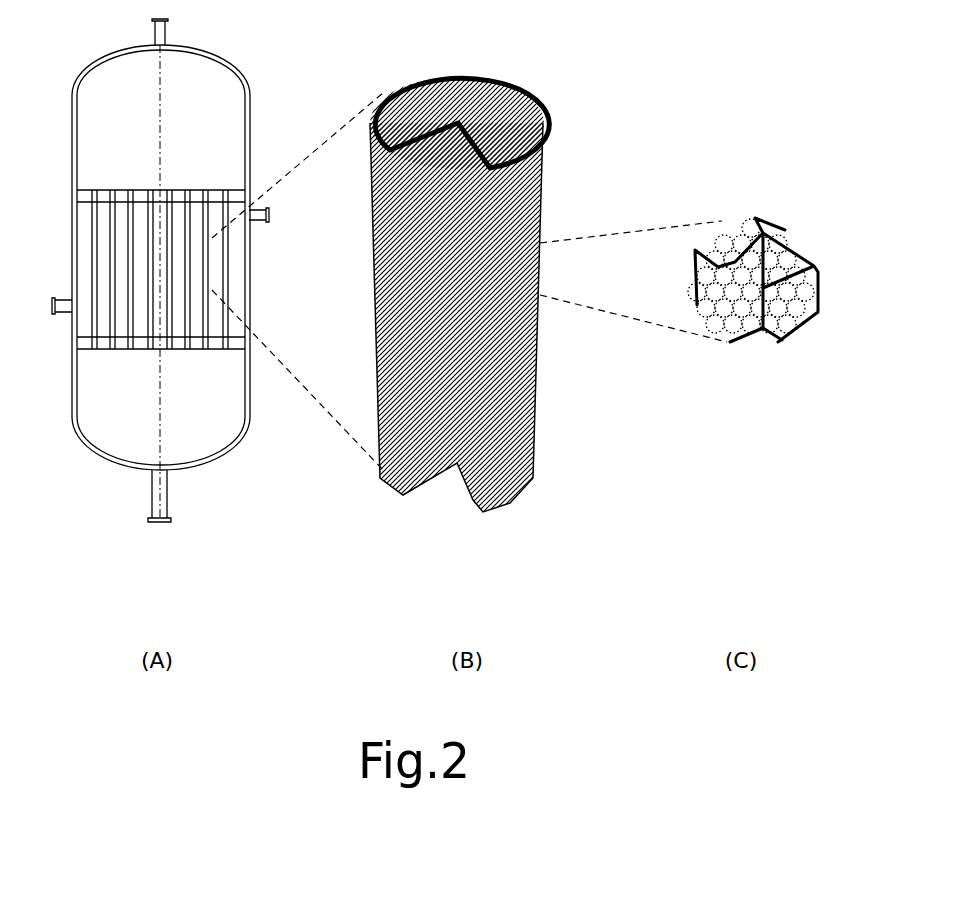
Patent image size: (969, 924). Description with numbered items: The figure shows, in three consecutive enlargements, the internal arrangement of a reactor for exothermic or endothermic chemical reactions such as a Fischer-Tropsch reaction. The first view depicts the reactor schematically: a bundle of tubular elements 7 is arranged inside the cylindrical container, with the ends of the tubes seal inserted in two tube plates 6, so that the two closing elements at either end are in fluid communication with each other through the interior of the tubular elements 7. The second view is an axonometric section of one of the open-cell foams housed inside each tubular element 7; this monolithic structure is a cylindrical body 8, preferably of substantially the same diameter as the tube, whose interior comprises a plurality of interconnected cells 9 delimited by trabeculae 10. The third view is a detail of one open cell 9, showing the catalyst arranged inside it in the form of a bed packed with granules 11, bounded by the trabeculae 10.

The tube plates 6 is at (150, 342).
The tubular elements 7 is at (213, 258).
The cylindrical body 8 is at (535, 364).
The interconnected cells 9 is at (440, 183).
The trabeculae 10 is at (763, 288).
The granules 11 is at (790, 317).